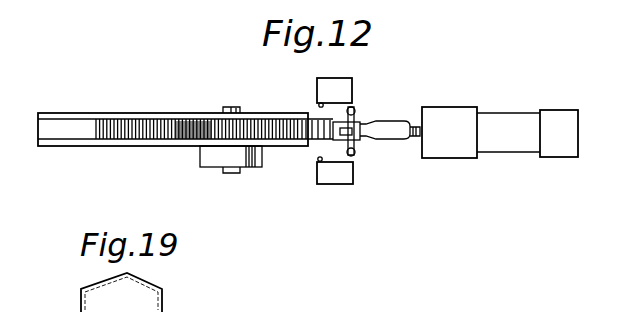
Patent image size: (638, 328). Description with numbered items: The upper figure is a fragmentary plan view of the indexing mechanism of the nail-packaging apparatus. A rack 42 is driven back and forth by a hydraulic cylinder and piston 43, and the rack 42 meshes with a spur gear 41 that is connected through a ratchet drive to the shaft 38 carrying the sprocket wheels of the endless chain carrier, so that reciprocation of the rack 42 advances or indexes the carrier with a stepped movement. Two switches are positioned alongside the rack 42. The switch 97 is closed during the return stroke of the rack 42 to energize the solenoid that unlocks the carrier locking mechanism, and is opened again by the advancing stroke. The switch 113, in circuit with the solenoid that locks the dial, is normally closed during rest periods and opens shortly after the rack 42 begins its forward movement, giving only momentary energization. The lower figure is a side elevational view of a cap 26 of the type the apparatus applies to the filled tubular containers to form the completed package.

In FIG. 12, the rack 42 is at (100, 131).
In FIG. 12, the spur gear 41 is at (192, 142).
In FIG. 12, the shaft 38 is at (227, 111).
In FIG. 12, the switch 97 is at (326, 84).
In FIG. 12, the switch 113 is at (336, 177).
In FIG. 12, the hydraulic cylinder and piston 43 is at (494, 118).
In FIG. 19, the cap 26 is at (155, 298).